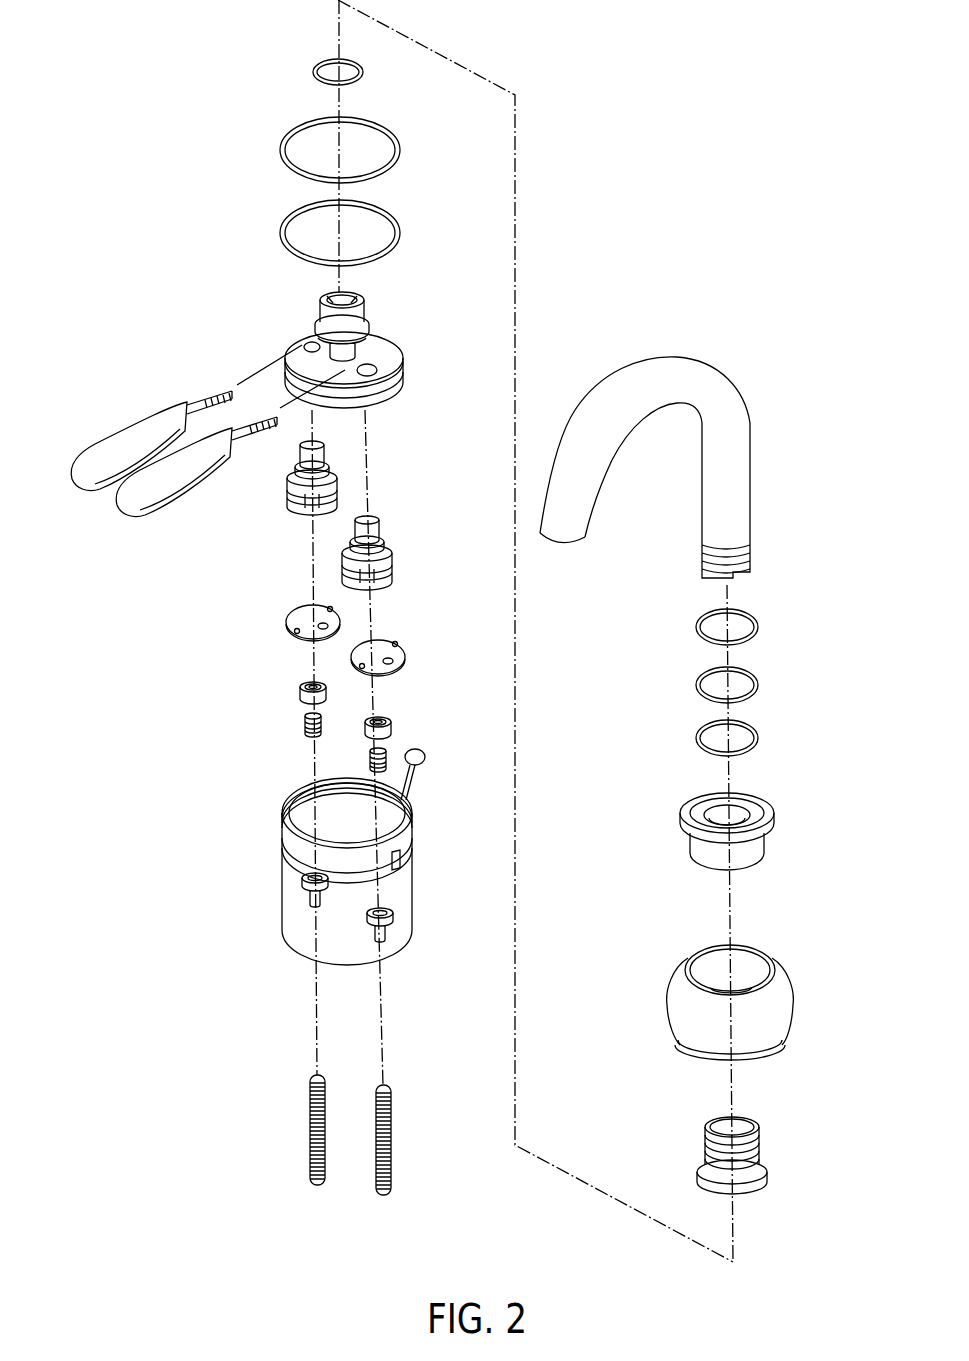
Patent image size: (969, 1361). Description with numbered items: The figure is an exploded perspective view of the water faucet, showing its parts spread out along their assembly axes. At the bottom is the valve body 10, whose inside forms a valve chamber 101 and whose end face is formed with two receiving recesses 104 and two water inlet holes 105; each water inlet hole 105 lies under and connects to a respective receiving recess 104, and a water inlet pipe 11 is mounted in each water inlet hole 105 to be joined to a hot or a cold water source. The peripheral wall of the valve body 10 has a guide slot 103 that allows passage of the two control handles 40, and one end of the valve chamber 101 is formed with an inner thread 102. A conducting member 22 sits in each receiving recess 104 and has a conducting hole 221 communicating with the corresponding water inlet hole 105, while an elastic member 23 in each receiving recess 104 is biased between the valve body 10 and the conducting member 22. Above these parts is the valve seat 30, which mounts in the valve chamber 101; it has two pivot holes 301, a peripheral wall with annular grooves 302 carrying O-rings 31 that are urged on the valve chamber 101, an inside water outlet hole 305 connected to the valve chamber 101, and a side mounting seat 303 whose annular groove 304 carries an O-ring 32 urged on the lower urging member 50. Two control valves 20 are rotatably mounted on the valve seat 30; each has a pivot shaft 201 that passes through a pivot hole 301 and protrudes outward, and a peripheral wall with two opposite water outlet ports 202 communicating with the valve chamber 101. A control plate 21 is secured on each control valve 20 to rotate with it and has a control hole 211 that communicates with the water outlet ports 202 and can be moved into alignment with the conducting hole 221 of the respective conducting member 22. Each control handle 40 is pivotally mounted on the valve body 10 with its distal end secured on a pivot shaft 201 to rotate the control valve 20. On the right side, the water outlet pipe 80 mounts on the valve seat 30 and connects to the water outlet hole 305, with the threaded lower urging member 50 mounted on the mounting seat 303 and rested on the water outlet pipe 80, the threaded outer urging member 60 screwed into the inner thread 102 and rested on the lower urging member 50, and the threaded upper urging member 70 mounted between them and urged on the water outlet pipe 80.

The valve body 10 is at (331, 882).
The valve chamber 101 is at (333, 832).
The inner thread 102 is at (298, 792).
The guide slot 103 is at (395, 860).
The receiving recess 104 is at (307, 883).
The water inlet hole 105 is at (312, 900).
The water inlet pipe 11 is at (308, 1130).
The control valve 20 is at (355, 511).
The pivot shaft 201 is at (312, 455).
The water outlet port 202 is at (280, 507).
The control plate 21 is at (348, 614).
The control hole 211 is at (323, 626).
The conducting member 22 is at (345, 689).
The conducting hole 221 is at (307, 685).
The elastic member 23 is at (300, 728).
The valve seat 30 is at (352, 310).
The pivot hole 301 is at (310, 338).
The annular groove 302 is at (377, 402).
The mounting seat 303 is at (365, 297).
The annular groove 304 is at (372, 322).
The water outlet hole 305 is at (316, 306).
The O-ring 31 is at (286, 218).
The O-ring 32 is at (325, 63).
The control handle 40 is at (105, 520).
The lower urging member 50 is at (772, 1183).
The outer urging member 60 is at (800, 1025).
The upper urging member 70 is at (782, 855).
The water outlet pipe 80 is at (757, 510).